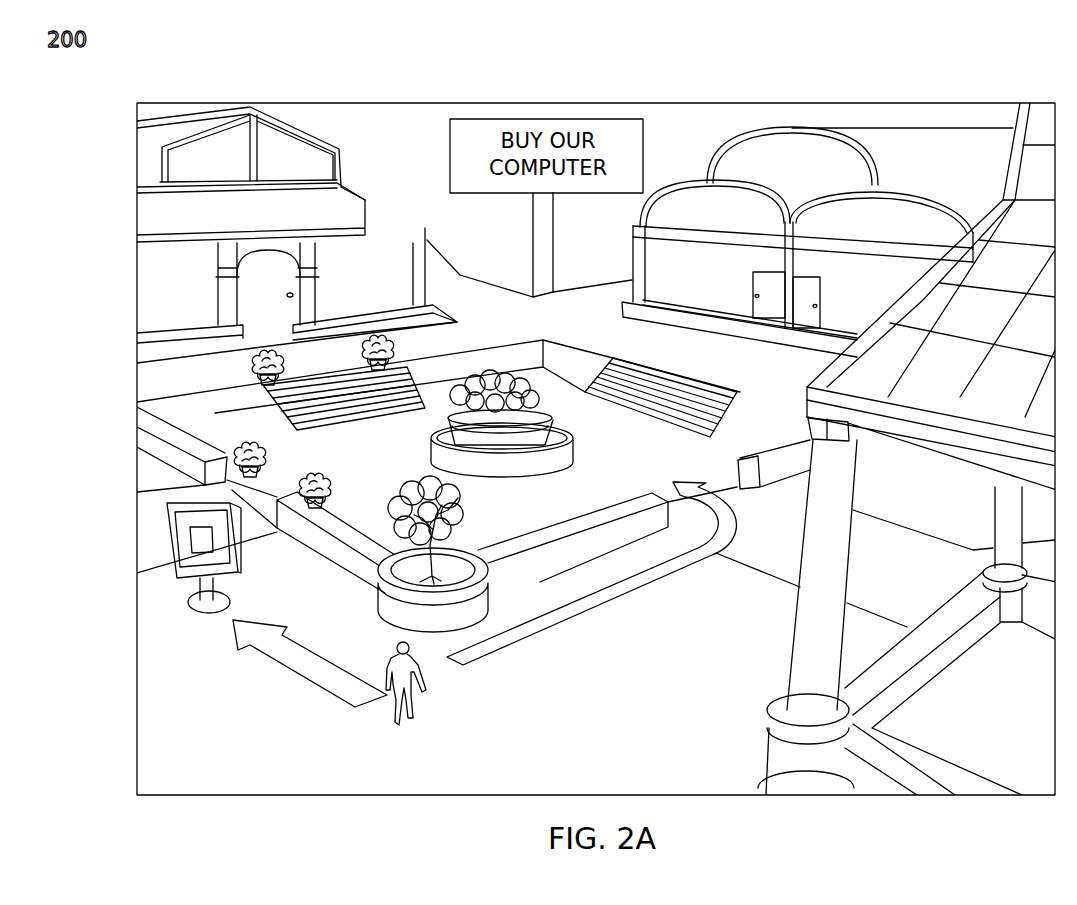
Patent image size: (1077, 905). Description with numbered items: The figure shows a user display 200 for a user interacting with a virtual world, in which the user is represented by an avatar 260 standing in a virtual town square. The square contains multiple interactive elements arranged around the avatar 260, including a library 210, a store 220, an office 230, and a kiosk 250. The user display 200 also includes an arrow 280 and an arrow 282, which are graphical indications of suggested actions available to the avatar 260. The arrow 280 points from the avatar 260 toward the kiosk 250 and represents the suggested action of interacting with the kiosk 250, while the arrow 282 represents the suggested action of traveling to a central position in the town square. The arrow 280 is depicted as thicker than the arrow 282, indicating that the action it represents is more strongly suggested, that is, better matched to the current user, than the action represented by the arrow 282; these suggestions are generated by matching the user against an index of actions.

The user display 200 is at (100, 40).
The library 210 is at (315, 135).
The store 220 is at (745, 183).
The office 230 is at (907, 190).
The kiosk 250 is at (205, 617).
The avatar 260 is at (417, 717).
The arrow 280 is at (277, 665).
The arrow 282 is at (583, 613).